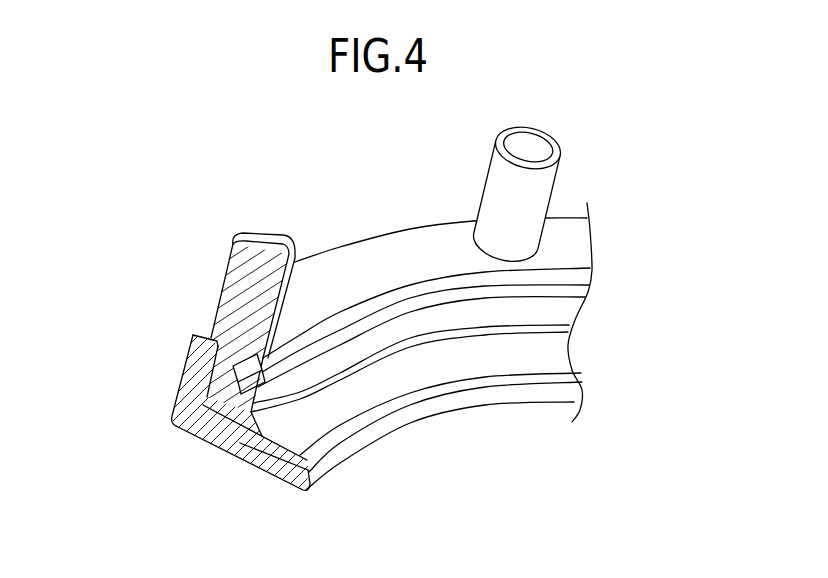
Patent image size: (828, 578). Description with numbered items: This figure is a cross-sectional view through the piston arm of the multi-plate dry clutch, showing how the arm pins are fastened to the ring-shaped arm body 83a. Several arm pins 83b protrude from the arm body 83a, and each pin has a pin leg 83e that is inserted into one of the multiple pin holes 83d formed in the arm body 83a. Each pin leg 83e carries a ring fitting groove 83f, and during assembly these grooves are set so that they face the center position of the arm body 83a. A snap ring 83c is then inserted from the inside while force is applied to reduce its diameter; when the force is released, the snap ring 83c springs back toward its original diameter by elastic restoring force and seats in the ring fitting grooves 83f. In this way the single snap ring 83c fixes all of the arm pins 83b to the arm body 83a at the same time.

The arm body 83a is at (387, 232).
The arm pin 83b is at (557, 176).
The snap ring 83c is at (247, 427).
The pin hole 83d is at (205, 377).
The pin leg 83e is at (210, 440).
The ring fitting groove 83f is at (242, 378).